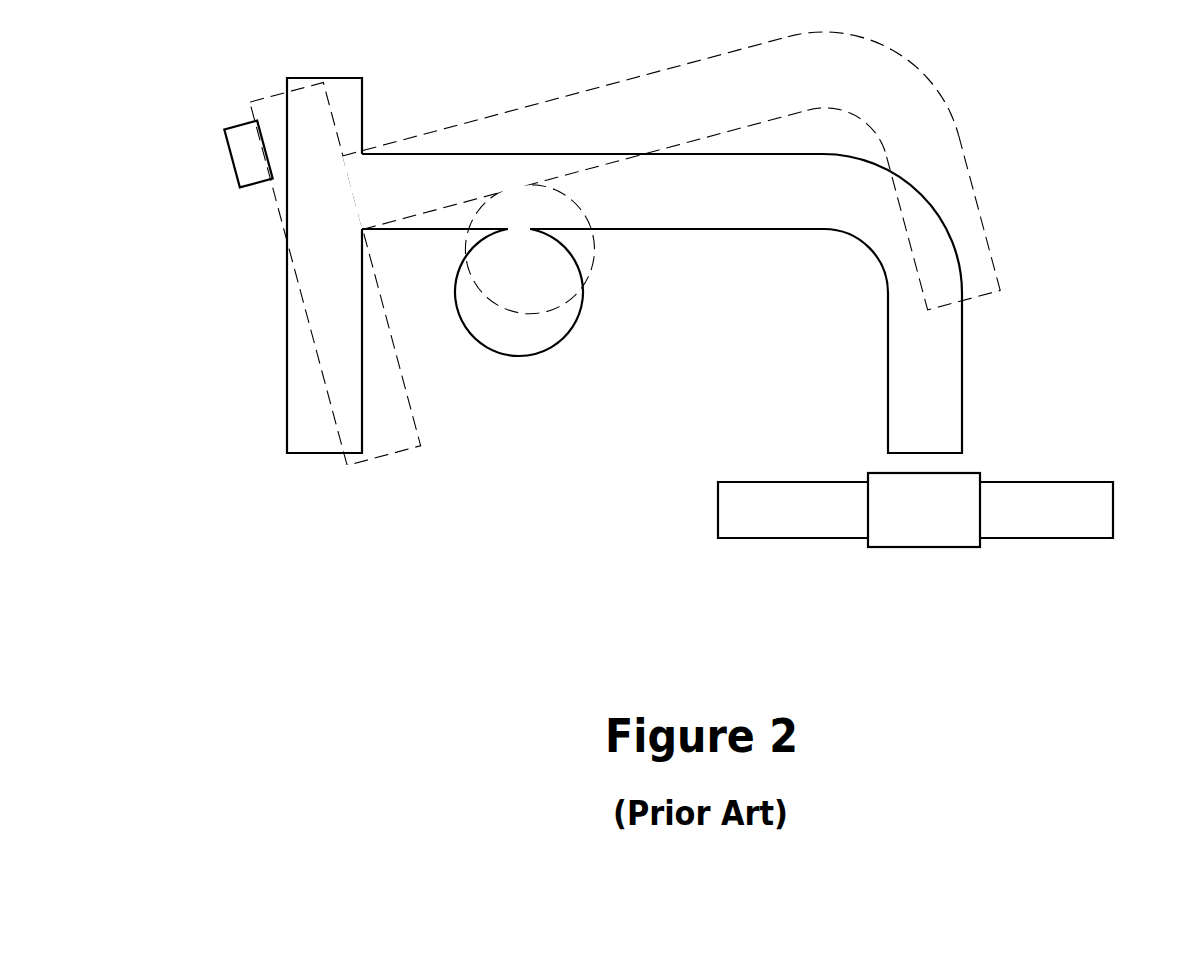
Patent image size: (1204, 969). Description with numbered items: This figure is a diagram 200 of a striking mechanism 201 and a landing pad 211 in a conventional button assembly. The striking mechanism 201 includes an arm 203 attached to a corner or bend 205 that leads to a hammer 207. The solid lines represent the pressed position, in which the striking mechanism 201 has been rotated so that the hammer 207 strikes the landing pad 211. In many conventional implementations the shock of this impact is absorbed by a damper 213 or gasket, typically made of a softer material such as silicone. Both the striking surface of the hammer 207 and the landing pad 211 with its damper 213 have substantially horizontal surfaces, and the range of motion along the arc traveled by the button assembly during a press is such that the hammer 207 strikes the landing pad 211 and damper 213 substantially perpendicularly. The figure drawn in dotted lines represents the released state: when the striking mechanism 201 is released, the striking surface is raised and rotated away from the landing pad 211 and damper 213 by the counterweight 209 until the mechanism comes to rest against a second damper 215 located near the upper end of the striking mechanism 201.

The diagram 200 is at (671, 336).
The striking mechanism 201 is at (287, 289).
The horizontal arm 203 is at (540, 199).
The corner or bend 205 is at (869, 252).
The hammer 207 is at (962, 366).
The counterweight 209 is at (583, 295).
The landing pad 211 is at (1113, 505).
The damper 213 is at (944, 524).
The second damper 215 is at (228, 152).